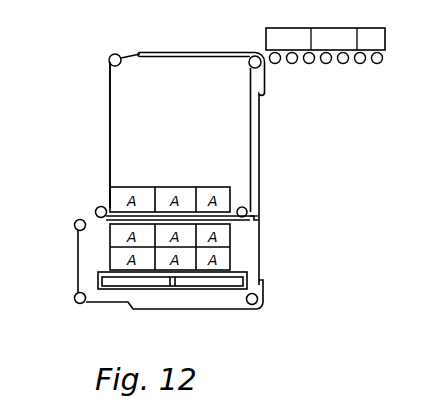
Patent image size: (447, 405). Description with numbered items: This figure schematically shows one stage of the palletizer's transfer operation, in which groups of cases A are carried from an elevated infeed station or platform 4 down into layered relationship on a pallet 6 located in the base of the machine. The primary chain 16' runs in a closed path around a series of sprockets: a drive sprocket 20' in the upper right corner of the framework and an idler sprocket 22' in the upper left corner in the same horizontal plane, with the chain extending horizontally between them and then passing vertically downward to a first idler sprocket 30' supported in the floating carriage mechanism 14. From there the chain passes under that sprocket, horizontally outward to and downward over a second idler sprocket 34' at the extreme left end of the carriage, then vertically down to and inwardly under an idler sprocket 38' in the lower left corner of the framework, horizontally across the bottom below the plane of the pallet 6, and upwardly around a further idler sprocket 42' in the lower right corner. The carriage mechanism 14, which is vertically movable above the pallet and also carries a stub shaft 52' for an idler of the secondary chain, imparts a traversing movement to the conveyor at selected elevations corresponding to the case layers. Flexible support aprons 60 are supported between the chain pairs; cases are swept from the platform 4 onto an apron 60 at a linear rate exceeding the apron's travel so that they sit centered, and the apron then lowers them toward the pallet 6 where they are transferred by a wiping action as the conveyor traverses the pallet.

The infeed station or platform 4 is at (326, 68).
The pallet 6 is at (127, 287).
The floating carriage mechanism 14 is at (250, 216).
The primary chain 16' is at (129, 135).
The drive sprocket 20' is at (229, 71).
The idler sprocket 22' is at (88, 65).
The idler sprocket 30' is at (83, 202).
The idler sprocket 34' is at (56, 235).
The idler sprocket 38' is at (62, 313).
The idler sprocket 42' is at (259, 316).
The stub shaft 52' is at (266, 201).
The flexible support apron 60 is at (211, 40).